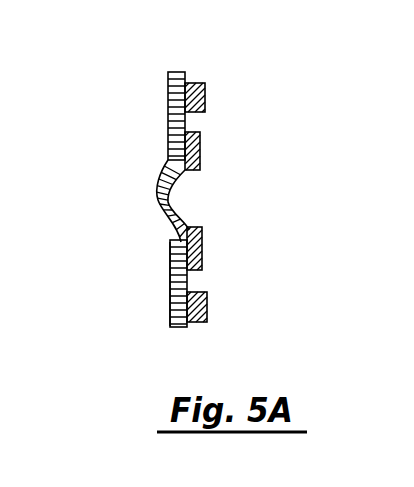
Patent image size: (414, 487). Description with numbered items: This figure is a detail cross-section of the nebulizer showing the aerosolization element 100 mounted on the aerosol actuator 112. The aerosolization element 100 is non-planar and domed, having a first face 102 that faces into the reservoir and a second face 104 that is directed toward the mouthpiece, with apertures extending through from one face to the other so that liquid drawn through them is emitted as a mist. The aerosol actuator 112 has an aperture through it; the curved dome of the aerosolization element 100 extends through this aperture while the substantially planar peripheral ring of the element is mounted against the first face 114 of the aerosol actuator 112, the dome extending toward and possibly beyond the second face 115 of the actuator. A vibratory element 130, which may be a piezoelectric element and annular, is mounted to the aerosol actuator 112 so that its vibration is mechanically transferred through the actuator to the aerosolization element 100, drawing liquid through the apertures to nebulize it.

The aerosolization element 100 is at (149, 194).
The first face 102 is at (178, 212).
The second face 104 is at (162, 190).
The aerosol actuator 112 is at (186, 118).
The first face of the aerosol actuator 114 is at (188, 273).
The second face of the aerosol actuator 115 is at (170, 260).
The vibratory element 130 is at (188, 82).